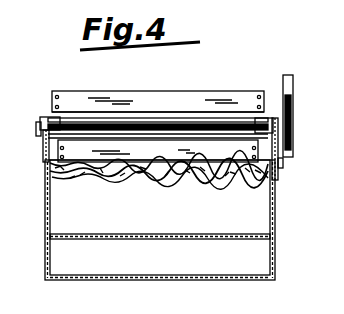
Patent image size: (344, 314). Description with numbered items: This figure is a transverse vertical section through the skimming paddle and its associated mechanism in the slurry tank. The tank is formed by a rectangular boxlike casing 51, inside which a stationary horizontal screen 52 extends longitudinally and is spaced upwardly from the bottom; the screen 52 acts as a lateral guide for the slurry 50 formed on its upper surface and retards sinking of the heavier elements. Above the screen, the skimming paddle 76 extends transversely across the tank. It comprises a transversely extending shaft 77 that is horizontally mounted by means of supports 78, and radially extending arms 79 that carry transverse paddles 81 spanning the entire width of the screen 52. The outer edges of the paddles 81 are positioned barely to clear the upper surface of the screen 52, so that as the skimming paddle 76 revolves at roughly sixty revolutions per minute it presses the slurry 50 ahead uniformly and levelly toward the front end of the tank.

The skimming paddle 76 is at (94, 83).
The paddles 81 is at (160, 124).
The radially extending arms 79 is at (52, 117).
The shaft 77 is at (183, 118).
The supports 78 is at (38, 136).
The casing 51 is at (45, 270).
The screen 52 is at (110, 178).
The slurry 50 is at (187, 178).